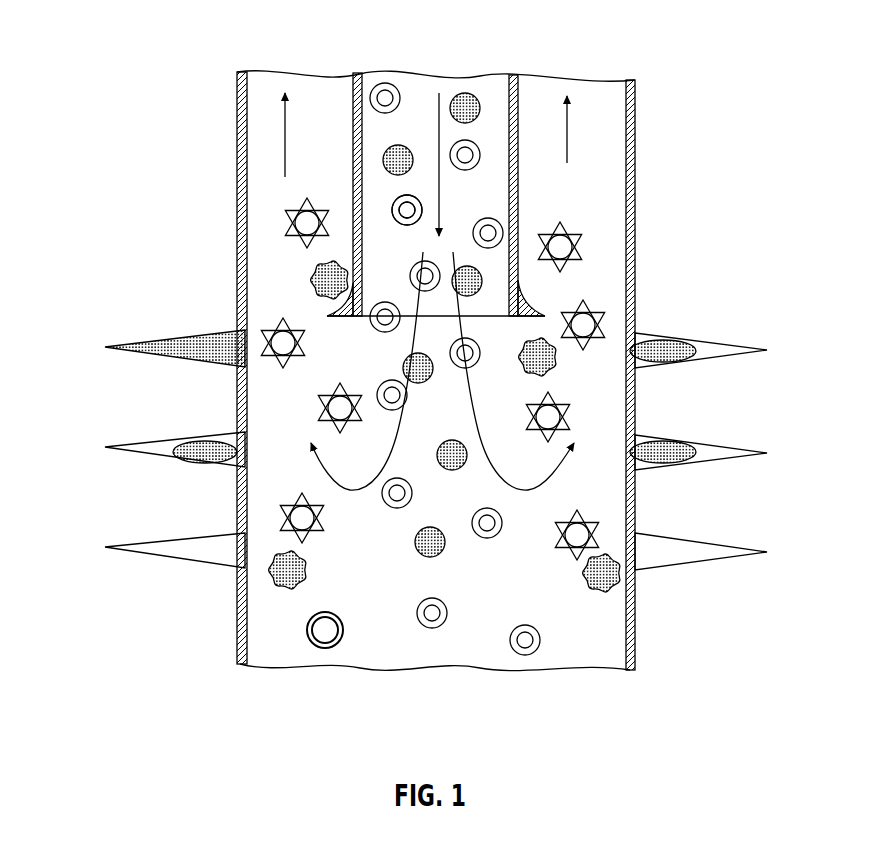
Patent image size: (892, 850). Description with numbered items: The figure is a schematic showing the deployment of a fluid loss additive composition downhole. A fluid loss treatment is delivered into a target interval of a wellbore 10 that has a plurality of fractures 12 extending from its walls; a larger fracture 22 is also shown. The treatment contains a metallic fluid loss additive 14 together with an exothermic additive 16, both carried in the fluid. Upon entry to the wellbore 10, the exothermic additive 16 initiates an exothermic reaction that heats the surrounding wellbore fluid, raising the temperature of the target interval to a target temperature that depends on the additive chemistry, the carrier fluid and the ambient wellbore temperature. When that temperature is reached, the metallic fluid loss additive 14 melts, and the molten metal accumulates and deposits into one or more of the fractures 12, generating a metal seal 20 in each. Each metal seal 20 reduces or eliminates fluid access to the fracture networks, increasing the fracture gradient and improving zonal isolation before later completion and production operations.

The wellbore 10 is at (170, 46).
The fractures 12 is at (177, 543).
The metallic fluid loss additive 14 is at (378, 160).
The exothermic additive 16 is at (380, 210).
The metal seal 20 is at (312, 274).
The protrusion 22 is at (146, 332).